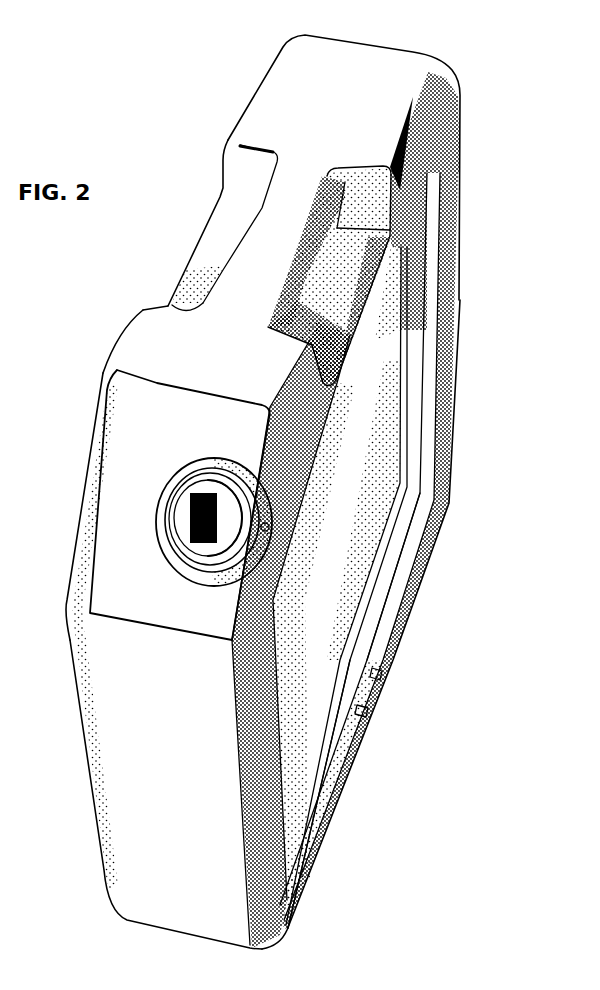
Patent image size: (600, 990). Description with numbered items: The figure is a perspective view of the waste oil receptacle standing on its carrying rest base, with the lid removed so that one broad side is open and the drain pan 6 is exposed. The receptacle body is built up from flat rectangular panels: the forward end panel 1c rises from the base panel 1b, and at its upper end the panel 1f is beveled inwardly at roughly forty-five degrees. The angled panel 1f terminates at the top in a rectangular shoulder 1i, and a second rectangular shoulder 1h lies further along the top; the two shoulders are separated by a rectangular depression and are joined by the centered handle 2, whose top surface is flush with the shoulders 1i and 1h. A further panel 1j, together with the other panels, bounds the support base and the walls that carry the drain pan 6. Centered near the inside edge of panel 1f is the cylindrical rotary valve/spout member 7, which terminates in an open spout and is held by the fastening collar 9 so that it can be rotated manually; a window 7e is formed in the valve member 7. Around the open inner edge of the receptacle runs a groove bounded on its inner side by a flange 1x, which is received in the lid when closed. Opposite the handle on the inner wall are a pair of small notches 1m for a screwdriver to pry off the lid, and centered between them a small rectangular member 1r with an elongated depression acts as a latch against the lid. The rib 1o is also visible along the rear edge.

The rectangular shoulder 1h is at (295, 75).
The handle 2 is at (260, 231).
The panel 1j is at (207, 265).
The rectangular shoulder 1i is at (137, 343).
The beveled panel 1f is at (122, 450).
The rotary valve/spout member 7 is at (156, 519).
The fastening collar 9 is at (223, 463).
The window 7e is at (186, 523).
The forward end panel 1c is at (133, 832).
The rear rib 1o is at (447, 257).
The drain pan 6 is at (372, 421).
The flange 1x is at (400, 562).
The notches 1m is at (378, 675).
The rectangular latch member 1r is at (363, 710).
The base panel 1b is at (345, 773).